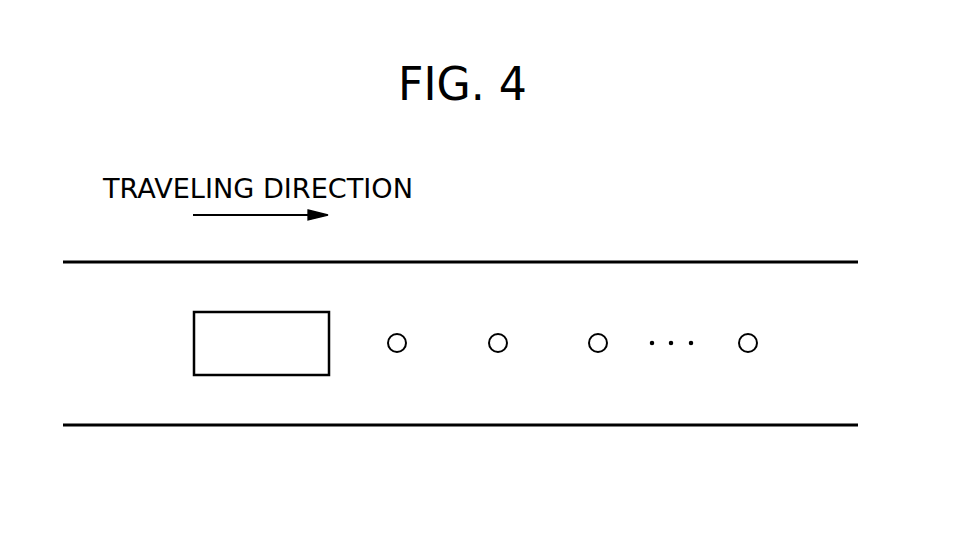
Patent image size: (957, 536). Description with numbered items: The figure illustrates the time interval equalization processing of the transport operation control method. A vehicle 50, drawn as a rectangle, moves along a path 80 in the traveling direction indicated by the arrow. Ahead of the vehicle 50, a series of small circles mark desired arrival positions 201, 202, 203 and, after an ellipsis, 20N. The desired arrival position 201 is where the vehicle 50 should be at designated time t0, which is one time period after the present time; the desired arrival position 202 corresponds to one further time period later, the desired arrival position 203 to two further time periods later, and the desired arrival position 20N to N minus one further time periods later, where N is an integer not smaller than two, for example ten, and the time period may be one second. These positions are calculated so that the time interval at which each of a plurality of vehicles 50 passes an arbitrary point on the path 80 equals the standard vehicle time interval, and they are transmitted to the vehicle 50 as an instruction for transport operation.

The path 80 is at (735, 262).
The vehicle 50 is at (260, 358).
The desired arrival position 201 is at (397, 352).
The desired arrival position 202 is at (498, 352).
The desired arrival position 203 is at (598, 352).
The desired arrival position 20N is at (748, 352).